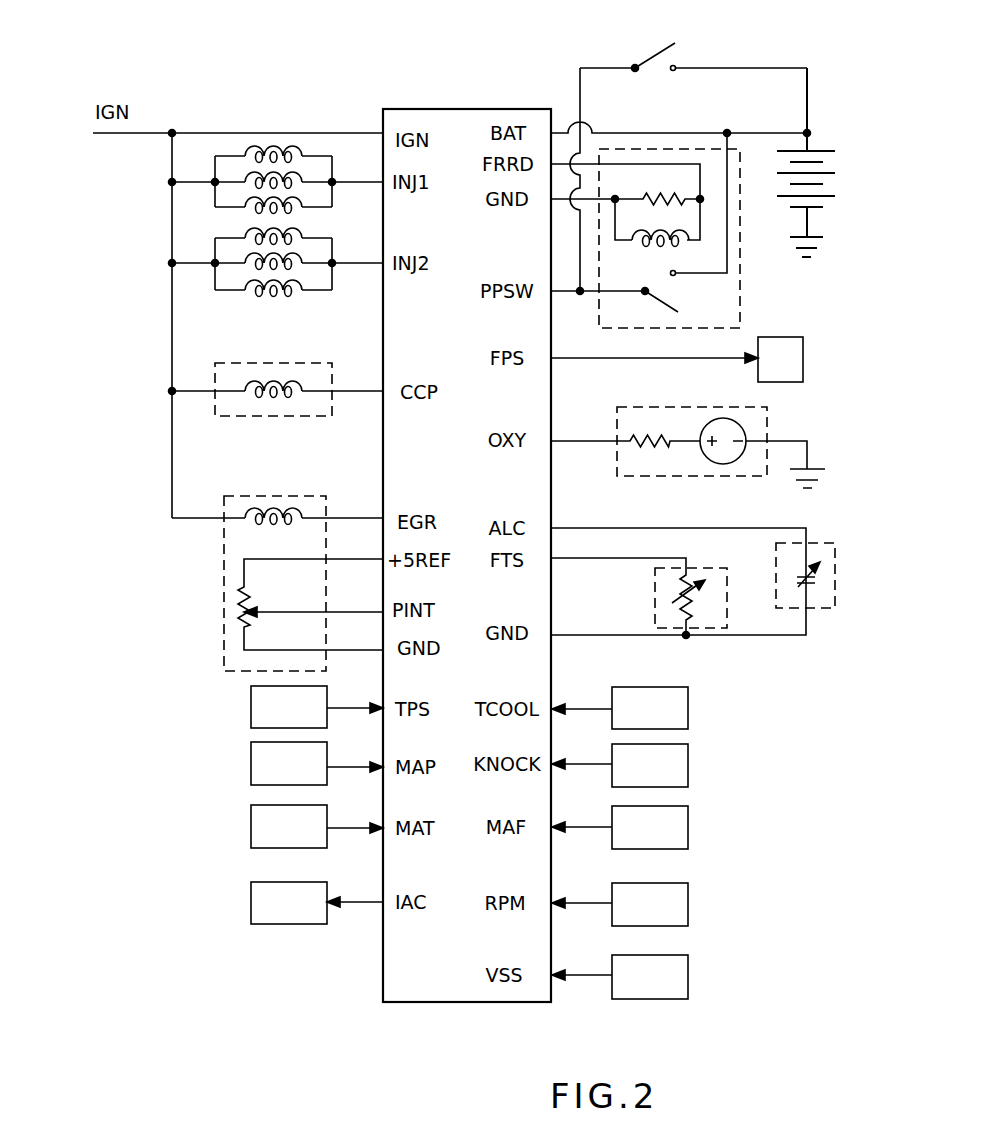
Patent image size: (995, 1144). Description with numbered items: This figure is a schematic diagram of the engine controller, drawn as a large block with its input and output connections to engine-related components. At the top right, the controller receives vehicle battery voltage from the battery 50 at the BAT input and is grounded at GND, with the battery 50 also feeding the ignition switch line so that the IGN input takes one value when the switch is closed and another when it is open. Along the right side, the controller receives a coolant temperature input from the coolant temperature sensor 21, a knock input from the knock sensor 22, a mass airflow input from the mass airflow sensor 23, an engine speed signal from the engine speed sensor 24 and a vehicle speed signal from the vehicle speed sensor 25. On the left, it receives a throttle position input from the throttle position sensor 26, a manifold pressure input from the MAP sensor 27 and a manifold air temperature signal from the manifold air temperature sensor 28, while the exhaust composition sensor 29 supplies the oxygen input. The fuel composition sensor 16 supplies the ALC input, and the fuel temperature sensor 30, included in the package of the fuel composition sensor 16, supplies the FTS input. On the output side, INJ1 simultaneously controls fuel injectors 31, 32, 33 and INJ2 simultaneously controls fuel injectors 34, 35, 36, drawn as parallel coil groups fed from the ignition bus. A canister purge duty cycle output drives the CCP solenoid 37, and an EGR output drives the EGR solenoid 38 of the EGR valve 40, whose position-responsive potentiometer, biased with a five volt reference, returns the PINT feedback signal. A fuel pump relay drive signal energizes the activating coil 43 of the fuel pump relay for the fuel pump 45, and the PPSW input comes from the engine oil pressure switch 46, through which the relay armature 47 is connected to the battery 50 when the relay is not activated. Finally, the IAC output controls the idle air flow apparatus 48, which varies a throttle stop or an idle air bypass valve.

The fuel composition sensor 16 is at (823, 600).
The coolant temperature sensor 21 is at (648, 706).
The knock sensor 22 is at (650, 760).
The mass airflow sensor 23 is at (668, 829).
The engine speed sensor 24 is at (653, 905).
The vehicle speed sensor 25 is at (655, 980).
The throttle position sensor 26 is at (273, 715).
The MAP sensor 27 is at (270, 771).
The manifold air temperature sensor 28 is at (270, 824).
The exhaust composition sensor 29 is at (727, 407).
The fuel temperature sensor 30 is at (667, 582).
The fuel injector 31 is at (273, 145).
The fuel injector 32 is at (263, 176).
The fuel injector 33 is at (262, 203).
The fuel injector 34 is at (277, 291).
The fuel injector 35 is at (293, 263).
The fuel injector 36 is at (303, 225).
The CCP solenoid 37 is at (253, 384).
The EGR solenoid 38 is at (280, 512).
The EGR valve 40 is at (222, 575).
The activating coil 43 is at (673, 243).
The fuel pump 45 is at (664, 207).
The engine oil pressure switch 46 is at (660, 63).
The armature 47 is at (787, 337).
The idle air flow apparatus 48 is at (280, 915).
The battery 50 is at (823, 150).